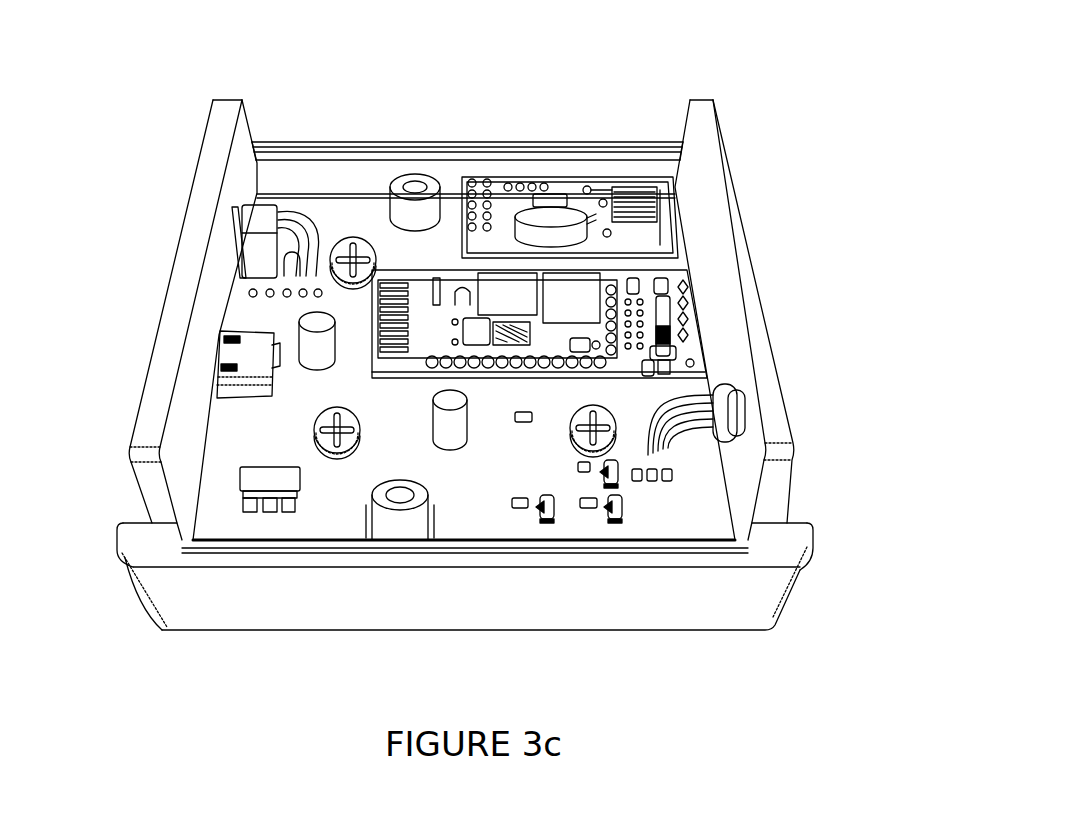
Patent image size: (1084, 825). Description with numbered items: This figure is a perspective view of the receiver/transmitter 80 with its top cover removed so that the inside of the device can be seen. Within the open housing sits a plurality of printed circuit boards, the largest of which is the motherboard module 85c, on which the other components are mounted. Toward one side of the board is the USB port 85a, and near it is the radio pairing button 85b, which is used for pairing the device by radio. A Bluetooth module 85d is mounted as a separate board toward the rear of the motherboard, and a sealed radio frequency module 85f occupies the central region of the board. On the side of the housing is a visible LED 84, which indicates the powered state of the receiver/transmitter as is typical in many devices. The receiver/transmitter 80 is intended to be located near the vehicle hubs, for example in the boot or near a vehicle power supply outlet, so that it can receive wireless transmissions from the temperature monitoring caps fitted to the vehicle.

The receiver/transmitter 80 is at (783, 199).
The visible LED 84 is at (797, 413).
The USB port 85a is at (213, 357).
The radio pairing button 85b is at (231, 233).
The motherboard module 85c is at (333, 217).
The Bluetooth module 85d is at (538, 207).
The sealed radio frequency module 85f is at (642, 311).